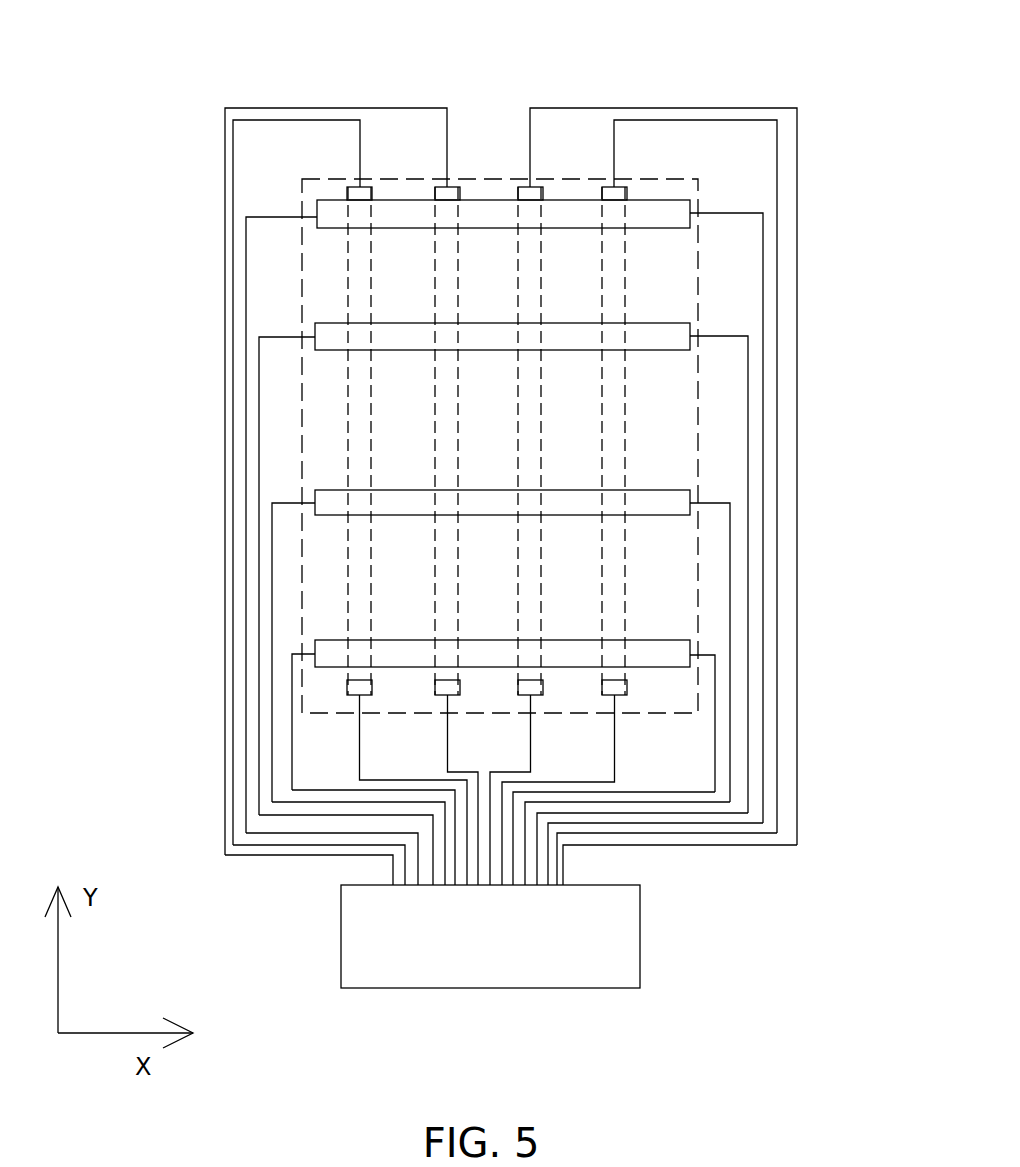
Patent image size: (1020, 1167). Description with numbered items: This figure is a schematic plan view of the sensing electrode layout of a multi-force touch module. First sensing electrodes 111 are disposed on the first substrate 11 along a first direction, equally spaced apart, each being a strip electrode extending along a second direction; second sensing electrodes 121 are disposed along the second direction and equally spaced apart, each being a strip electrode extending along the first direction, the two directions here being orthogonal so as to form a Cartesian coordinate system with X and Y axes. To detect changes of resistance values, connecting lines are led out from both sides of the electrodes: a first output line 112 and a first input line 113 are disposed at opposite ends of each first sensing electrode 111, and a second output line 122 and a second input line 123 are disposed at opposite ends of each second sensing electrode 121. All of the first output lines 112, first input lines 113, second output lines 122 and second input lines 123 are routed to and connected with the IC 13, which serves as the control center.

The first substrate 11 is at (411, 168).
The first sensing electrodes 111 is at (643, 197).
The first output line 112 is at (738, 208).
The first input line 113 is at (263, 208).
The second sensing electrodes 121 is at (347, 407).
The second output line 122 is at (355, 148).
The second input line 123 is at (355, 742).
The IC 13 is at (340, 952).